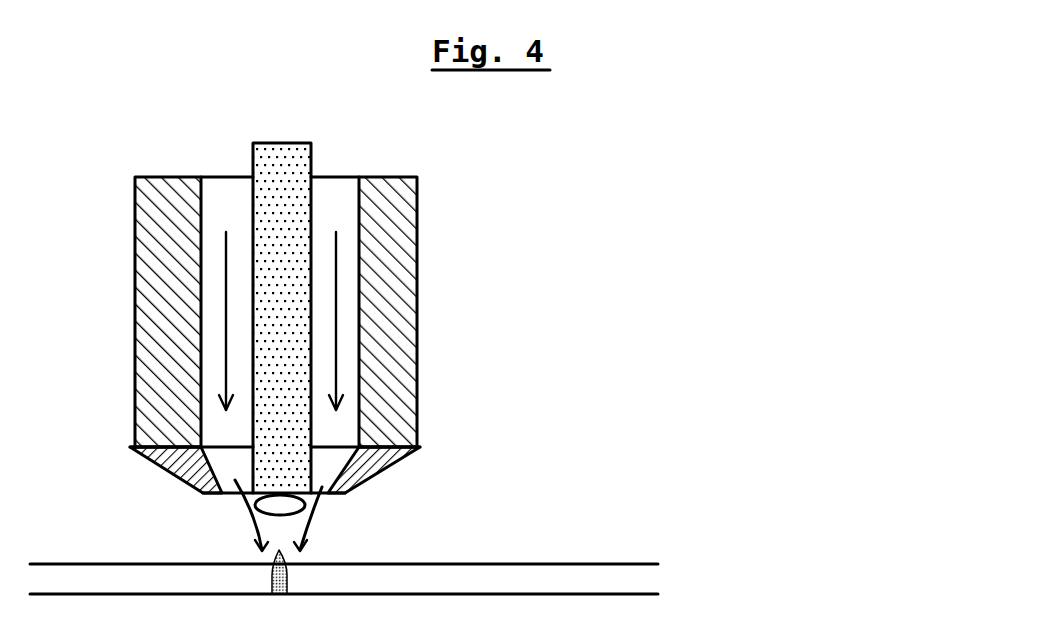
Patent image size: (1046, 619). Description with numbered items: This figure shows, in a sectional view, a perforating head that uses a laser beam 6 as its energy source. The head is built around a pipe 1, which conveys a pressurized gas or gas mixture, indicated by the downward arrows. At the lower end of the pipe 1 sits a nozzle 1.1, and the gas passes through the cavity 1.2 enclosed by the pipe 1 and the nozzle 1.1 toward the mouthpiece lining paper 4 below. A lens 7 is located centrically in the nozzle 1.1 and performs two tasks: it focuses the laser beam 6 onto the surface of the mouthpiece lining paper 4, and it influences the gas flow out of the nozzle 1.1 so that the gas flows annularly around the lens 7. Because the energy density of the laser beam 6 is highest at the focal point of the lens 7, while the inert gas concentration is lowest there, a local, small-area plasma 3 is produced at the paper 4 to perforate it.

The pipe 1 is at (392, 390).
The nozzle 1.1 is at (405, 458).
The cavity 1.2 is at (336, 216).
The plasma 3 is at (283, 578).
The mouthpiece lining paper 4 is at (422, 578).
The laser beam 6 is at (280, 333).
The lens 7 is at (278, 505).